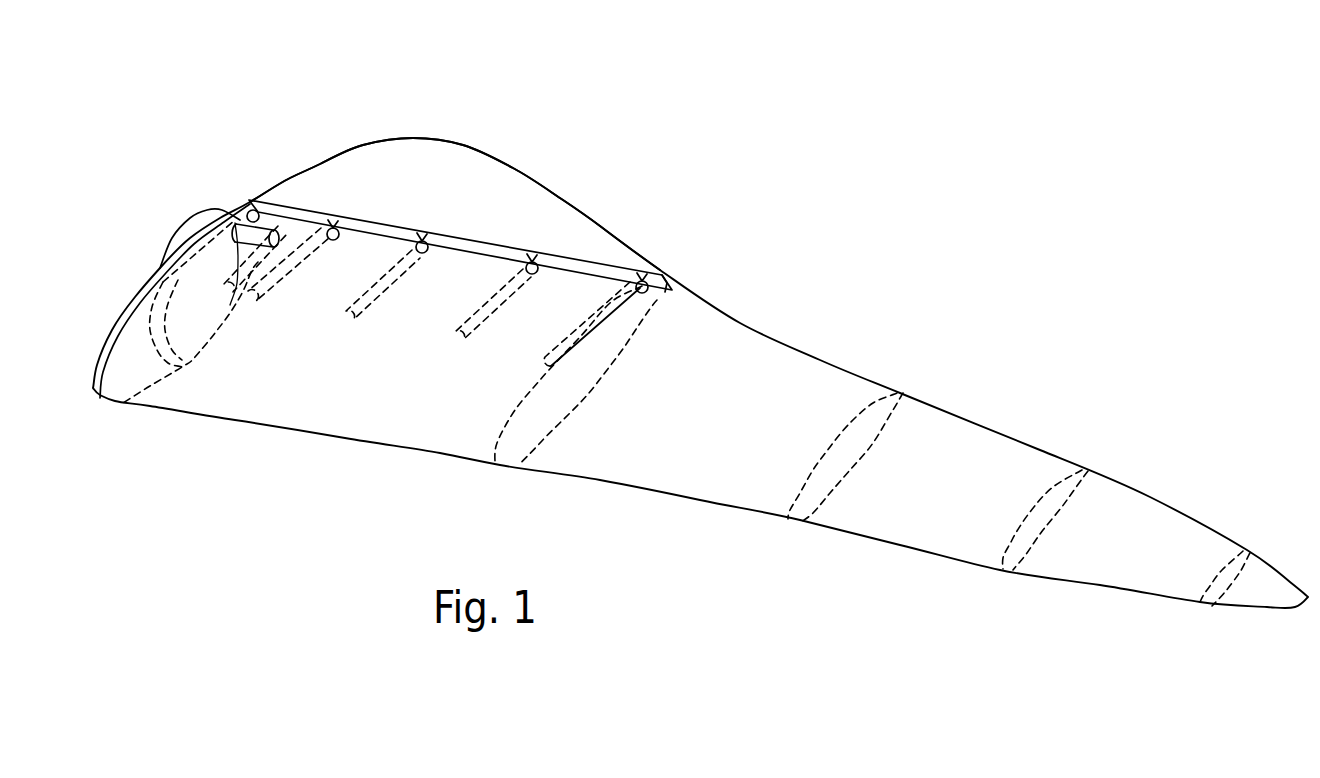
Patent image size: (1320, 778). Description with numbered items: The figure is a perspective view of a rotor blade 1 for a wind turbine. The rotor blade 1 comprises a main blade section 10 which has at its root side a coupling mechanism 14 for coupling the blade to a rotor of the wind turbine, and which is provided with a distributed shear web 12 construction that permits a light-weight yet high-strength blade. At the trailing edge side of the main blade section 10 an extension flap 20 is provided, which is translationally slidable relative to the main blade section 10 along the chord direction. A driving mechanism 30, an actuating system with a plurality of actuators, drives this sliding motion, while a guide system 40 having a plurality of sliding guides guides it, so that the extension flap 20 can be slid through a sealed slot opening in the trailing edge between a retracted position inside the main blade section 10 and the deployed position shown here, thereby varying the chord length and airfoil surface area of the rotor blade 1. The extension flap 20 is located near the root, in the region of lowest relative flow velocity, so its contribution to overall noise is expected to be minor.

The rotor blade 1 is at (829, 137).
The main blade section 10 is at (820, 345).
The shear web 12 is at (1060, 487).
The coupling mechanism 14 is at (168, 252).
The extension flap 20 is at (481, 194).
The driving mechanism 30 is at (267, 233).
The guide system 40 is at (281, 288).